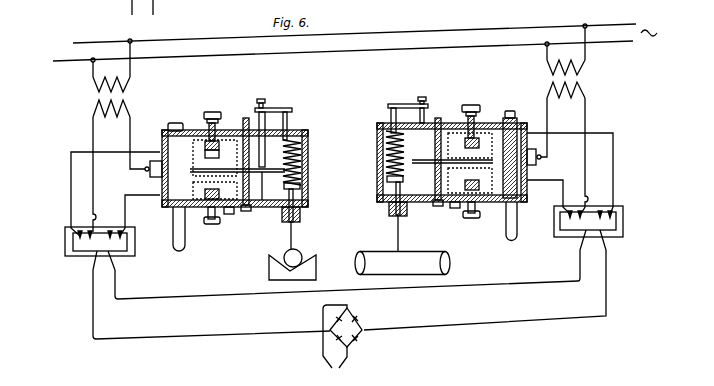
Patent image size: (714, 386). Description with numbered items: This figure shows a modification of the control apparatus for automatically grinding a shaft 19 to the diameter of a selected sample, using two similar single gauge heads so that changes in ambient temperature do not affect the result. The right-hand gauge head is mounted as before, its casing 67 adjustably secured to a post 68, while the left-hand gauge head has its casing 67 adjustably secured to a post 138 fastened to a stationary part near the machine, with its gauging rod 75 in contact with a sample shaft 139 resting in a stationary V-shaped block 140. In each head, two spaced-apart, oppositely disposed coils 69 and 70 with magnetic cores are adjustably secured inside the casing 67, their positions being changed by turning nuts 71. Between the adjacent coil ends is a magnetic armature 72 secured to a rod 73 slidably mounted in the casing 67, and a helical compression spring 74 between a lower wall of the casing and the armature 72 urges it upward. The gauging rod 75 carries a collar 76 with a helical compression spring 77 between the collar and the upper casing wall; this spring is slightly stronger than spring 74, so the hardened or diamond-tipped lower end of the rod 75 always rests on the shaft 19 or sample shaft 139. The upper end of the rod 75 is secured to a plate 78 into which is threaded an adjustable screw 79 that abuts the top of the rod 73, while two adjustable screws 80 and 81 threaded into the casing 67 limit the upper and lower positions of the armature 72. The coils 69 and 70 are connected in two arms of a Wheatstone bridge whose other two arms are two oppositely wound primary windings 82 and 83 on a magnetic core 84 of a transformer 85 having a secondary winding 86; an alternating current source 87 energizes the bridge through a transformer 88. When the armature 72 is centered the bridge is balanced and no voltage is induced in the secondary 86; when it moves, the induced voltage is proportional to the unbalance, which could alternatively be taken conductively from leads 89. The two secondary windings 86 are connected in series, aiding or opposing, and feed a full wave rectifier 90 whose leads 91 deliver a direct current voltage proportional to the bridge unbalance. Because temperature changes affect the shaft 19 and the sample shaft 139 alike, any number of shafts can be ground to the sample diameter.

The shaft 19 is at (430, 252).
The casing 67 is at (306, 134).
The post 68 is at (506, 229).
The coil 69 is at (229, 138).
The coil 70 is at (209, 208).
The nuts 71 is at (208, 122).
The armature 72 is at (236, 214).
The rod 73 is at (336, 153).
The helical compression spring 74 is at (301, 193).
The gauging rod 75 is at (289, 231).
The collar 76 is at (301, 184).
The helical compression spring 77 is at (301, 160).
The plate 78 is at (279, 108).
The adjustable screw 79 is at (261, 99).
The adjustable screw 80 is at (246, 118).
The adjustable screw 81 is at (248, 212).
The primary winding 82 is at (84, 226).
The primary winding 83 is at (113, 224).
The magnetic core 84 is at (78, 254).
The transformer 85 is at (65, 243).
The secondary winding 86 is at (112, 256).
The alternating current source 87 is at (212, 40).
The transformer 88 is at (136, 96).
The leads 89 is at (138, 150).
The full wave rectifier 90 is at (353, 340).
The leads 91 is at (335, 344).
The post 138 is at (173, 241).
The sample shaft 139 is at (300, 251).
The V-shaped block 140 is at (268, 266).